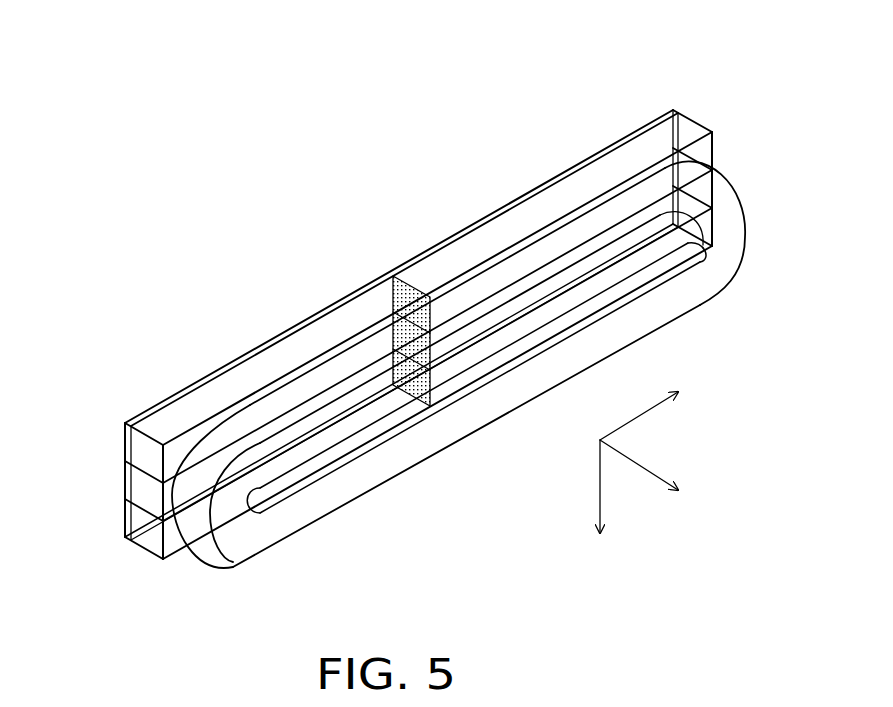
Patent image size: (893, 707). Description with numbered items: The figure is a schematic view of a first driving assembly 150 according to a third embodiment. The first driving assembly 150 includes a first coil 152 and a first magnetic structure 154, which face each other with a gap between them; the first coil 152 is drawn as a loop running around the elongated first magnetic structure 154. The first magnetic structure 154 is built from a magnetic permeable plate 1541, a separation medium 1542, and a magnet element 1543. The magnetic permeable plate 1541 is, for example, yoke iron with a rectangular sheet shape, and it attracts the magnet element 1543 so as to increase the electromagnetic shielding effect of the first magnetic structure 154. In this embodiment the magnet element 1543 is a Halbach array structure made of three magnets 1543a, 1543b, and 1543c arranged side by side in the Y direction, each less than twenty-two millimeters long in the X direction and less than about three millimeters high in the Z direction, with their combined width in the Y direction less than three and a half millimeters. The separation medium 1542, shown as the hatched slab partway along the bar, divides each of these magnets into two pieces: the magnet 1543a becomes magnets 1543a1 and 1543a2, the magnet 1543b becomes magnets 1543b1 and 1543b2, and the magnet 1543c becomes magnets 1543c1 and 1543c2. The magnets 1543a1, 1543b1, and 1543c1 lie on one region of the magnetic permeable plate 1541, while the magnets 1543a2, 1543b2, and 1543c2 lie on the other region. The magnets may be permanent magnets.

The first driving assembly 150 is at (766, 557).
The first coil 152 is at (730, 228).
The first magnetic structure 154 is at (630, 36).
The magnetic permeable plate 1541 is at (638, 134).
The separation medium 1542 is at (413, 275).
The magnet element 1543 is at (543, 76).
The magnet 1543a is at (410, 113).
The magnet 1543b is at (225, 113).
The magnet 1543c is at (598, 113).
The magnet 1543a1 is at (353, 315).
The magnet 1543a2 is at (428, 252).
The magnet 1543b1 is at (140, 488).
The magnet 1543b2 is at (393, 357).
The magnet 1543c1 is at (440, 365).
The magnet 1543c2 is at (632, 273).